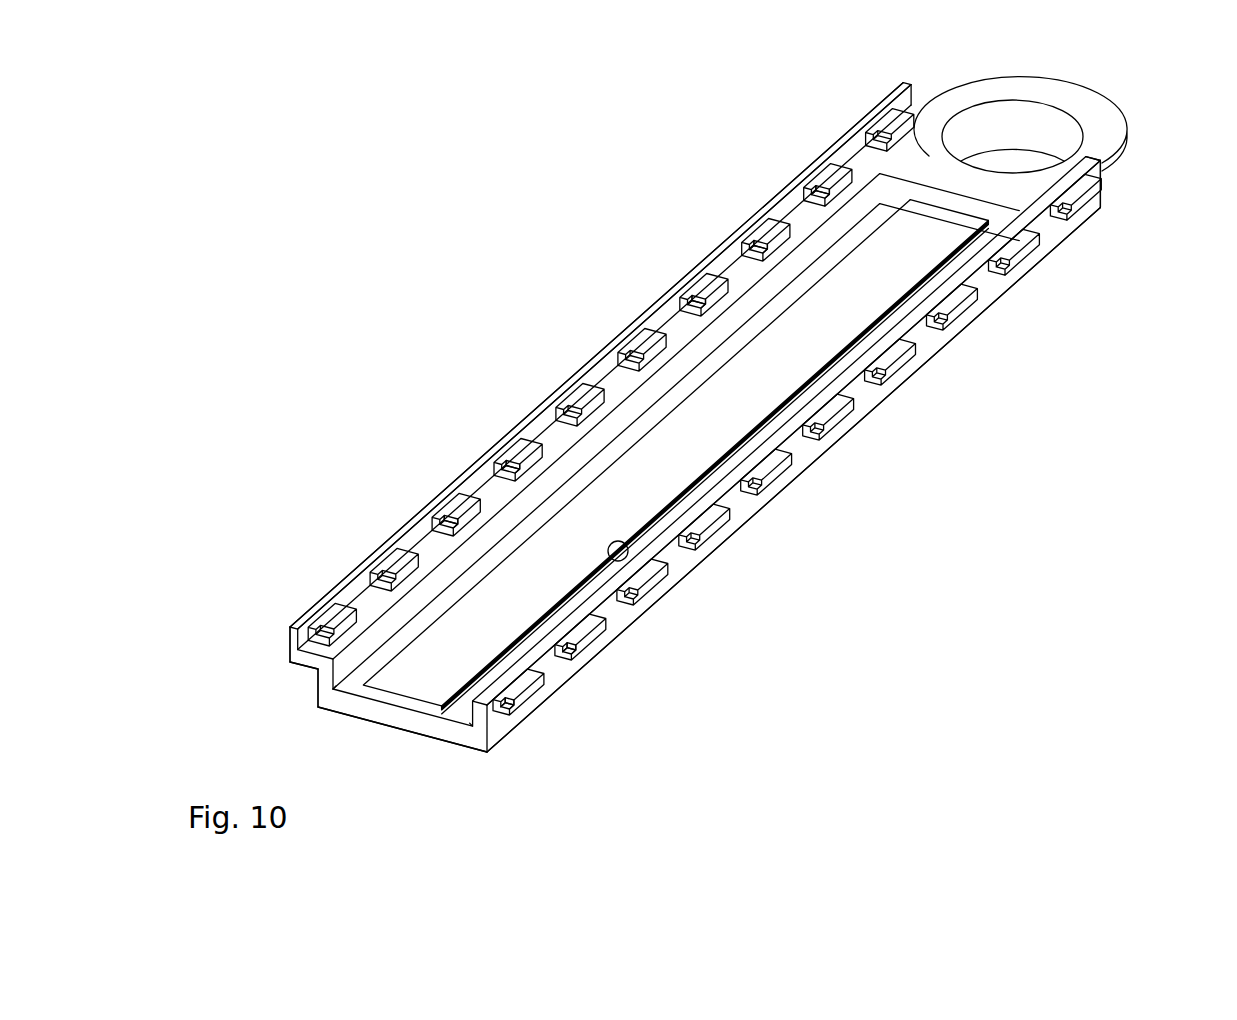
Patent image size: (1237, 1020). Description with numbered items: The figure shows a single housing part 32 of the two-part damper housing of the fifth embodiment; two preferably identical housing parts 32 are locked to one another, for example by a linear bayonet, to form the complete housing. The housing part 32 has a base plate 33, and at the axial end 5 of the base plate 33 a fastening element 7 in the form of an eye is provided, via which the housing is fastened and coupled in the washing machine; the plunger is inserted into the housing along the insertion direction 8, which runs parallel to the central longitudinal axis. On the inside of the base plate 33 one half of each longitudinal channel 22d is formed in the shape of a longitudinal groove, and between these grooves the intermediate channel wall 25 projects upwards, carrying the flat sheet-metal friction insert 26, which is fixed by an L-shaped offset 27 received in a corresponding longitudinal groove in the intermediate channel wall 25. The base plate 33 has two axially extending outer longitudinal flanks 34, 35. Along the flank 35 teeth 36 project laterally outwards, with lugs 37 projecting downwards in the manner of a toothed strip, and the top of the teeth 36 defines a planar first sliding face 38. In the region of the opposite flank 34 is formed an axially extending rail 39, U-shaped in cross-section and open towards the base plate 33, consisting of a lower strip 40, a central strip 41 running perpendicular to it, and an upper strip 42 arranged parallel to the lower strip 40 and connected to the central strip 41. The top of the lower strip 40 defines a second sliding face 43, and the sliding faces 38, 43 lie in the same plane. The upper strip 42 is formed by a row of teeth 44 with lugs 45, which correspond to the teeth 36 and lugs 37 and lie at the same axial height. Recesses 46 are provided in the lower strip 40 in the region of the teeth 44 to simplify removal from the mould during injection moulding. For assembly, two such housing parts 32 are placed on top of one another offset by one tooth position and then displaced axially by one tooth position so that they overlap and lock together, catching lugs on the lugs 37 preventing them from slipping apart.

The axial end 5 is at (960, 82).
The fastening element 7 is at (1065, 138).
The insertion direction 8 is at (875, 428).
The longitudinal channel 22d is at (342, 695).
The intermediate channel wall 25 is at (633, 549).
The friction insert 26 is at (390, 681).
The L-shaped offset 27 is at (1015, 233).
The housing part 32 is at (527, 404).
The base plate 33 is at (407, 722).
The longitudinal flank 34 is at (318, 690).
The longitudinal flank 35 is at (747, 515).
The tooth 36 is at (530, 703).
The lug 37 is at (503, 722).
The first sliding face 38 is at (938, 342).
The rail 39 is at (466, 468).
The lower strip 40 is at (310, 660).
The central strip 41 is at (293, 642).
The upper strip 42 is at (303, 627).
The second sliding face 43 is at (360, 600).
The tooth 44 is at (697, 287).
The lug 45 is at (687, 307).
The recess 46 is at (450, 537).